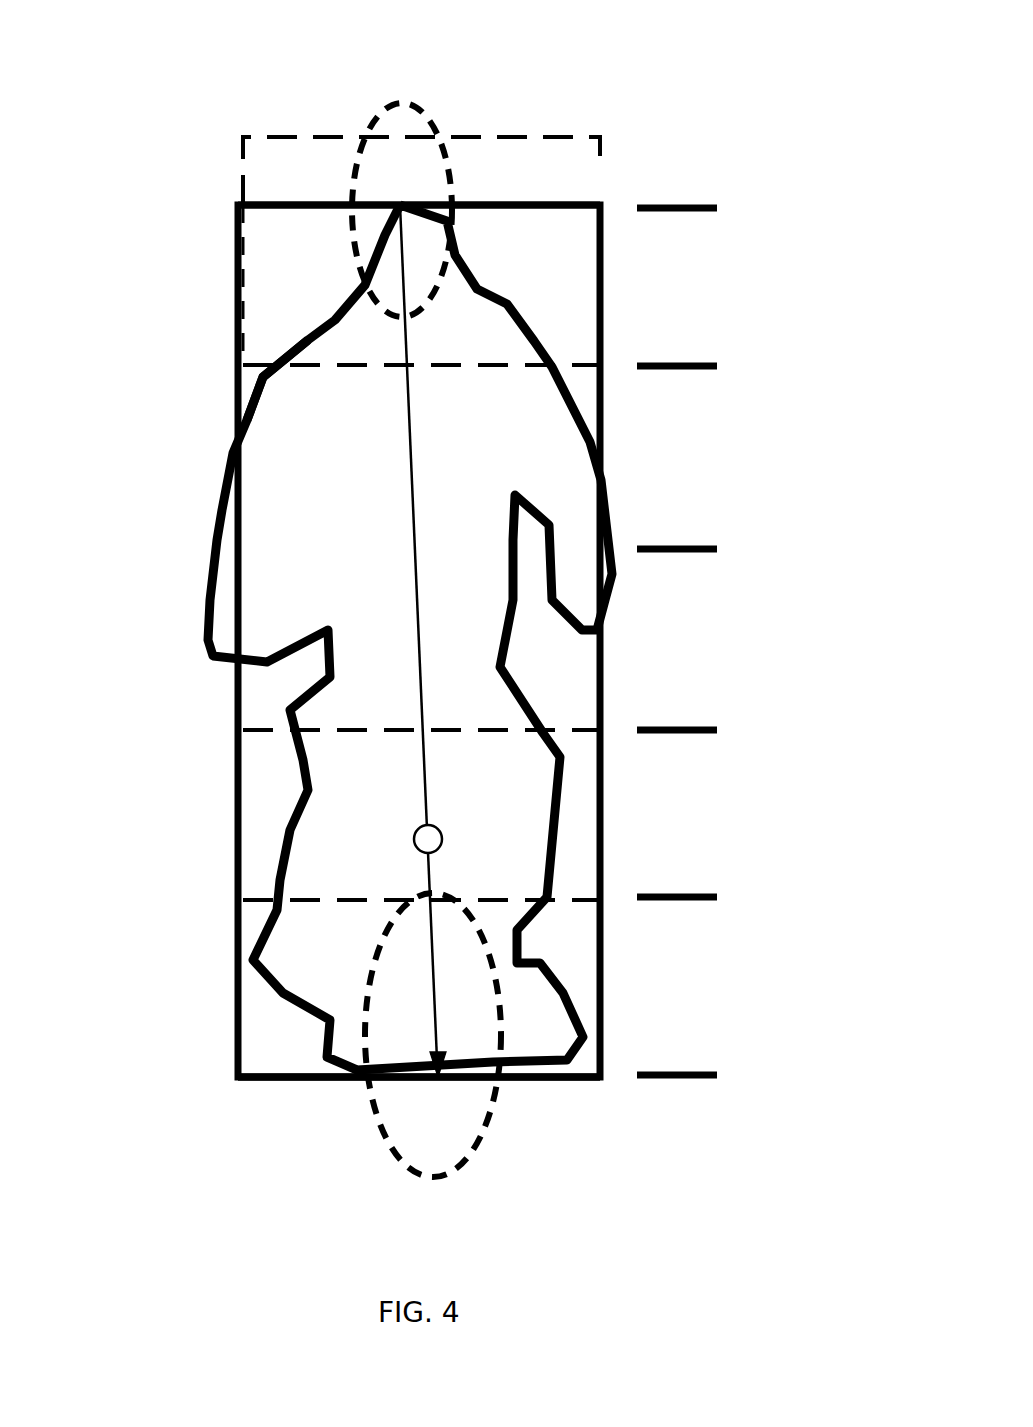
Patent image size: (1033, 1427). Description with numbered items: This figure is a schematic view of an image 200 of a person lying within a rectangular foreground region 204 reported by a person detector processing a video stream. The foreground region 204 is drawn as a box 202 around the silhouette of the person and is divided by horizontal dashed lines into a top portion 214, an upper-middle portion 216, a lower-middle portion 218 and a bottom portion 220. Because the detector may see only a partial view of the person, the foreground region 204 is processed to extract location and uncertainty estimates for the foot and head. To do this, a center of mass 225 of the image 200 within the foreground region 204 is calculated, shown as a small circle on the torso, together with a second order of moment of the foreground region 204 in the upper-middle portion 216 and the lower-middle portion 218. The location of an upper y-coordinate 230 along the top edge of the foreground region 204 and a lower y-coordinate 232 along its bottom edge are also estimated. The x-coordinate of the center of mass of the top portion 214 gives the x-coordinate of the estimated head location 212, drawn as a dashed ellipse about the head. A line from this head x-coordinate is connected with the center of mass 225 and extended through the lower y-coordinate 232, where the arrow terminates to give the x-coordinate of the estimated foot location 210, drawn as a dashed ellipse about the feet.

The image 200 is at (580, 511).
The bounding box 202 is at (627, 108).
The foreground region 204 is at (228, 388).
The foot location 210 is at (438, 1082).
The head location 212 is at (405, 197).
The top portion 214 is at (211, 246).
The upper-middle portion 216 is at (219, 480).
The lower-middle portion 218 is at (178, 834).
The bottom portion 220 is at (183, 1002).
The center of mass 225 is at (443, 839).
The upper y-coordinate 230 is at (564, 203).
The lower y-coordinate 232 is at (258, 1084).